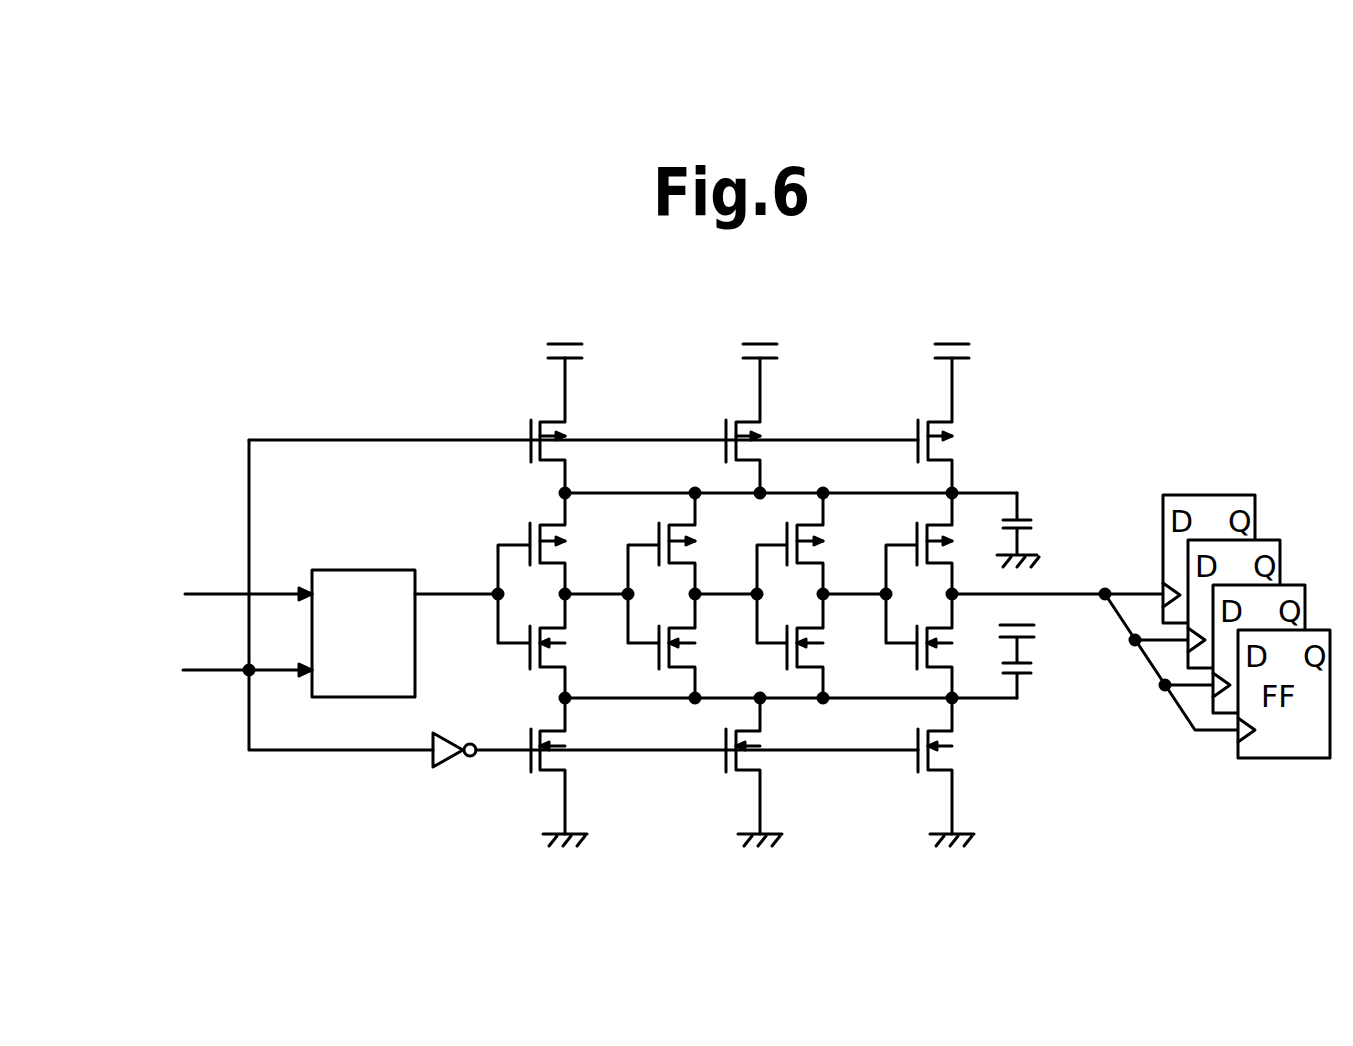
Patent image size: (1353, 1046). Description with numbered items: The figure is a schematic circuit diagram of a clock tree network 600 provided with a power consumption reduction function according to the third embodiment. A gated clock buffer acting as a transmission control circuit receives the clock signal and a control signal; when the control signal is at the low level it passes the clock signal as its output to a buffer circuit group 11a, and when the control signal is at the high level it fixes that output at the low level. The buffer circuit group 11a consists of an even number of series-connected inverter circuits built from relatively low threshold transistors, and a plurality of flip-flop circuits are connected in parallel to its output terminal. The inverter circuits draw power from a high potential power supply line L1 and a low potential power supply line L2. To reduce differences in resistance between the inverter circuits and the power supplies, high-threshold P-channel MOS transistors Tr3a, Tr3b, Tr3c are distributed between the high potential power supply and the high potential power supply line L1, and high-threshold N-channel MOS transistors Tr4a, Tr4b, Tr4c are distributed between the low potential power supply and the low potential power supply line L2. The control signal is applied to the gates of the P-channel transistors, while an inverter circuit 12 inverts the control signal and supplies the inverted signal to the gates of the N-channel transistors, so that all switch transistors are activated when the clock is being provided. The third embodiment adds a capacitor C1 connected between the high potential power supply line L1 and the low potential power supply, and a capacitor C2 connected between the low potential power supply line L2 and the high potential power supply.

The clock tree network 600 is at (440, 326).
The buffer circuit group 11a is at (984, 468).
The inverter circuit 12 is at (447, 767).
The high potential power supply line L1 is at (858, 493).
The low potential power supply line L2 is at (843, 698).
The capacitor C1 is at (1025, 516).
The capacitor C2 is at (1025, 684).
The transistor Tr3a is at (550, 418).
The transistor Tr3b is at (745, 418).
The transistor Tr3c is at (943, 418).
The transistor Tr4a is at (552, 770).
The transistor Tr4b is at (747, 770).
The transistor Tr4c is at (942, 770).